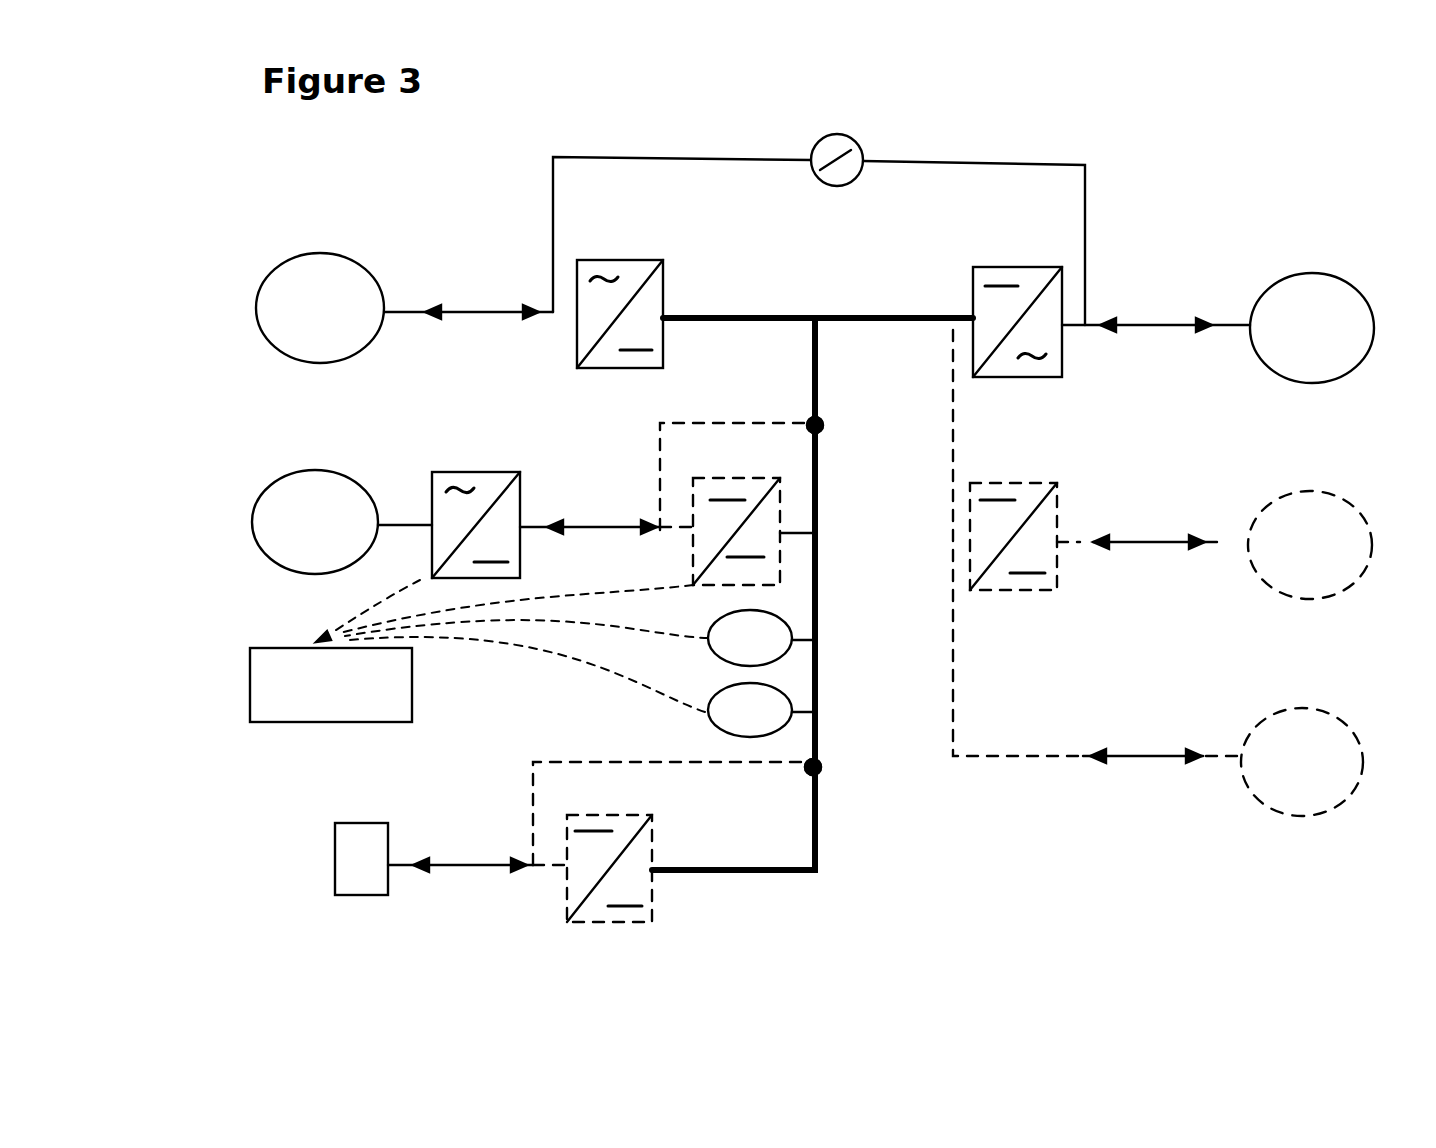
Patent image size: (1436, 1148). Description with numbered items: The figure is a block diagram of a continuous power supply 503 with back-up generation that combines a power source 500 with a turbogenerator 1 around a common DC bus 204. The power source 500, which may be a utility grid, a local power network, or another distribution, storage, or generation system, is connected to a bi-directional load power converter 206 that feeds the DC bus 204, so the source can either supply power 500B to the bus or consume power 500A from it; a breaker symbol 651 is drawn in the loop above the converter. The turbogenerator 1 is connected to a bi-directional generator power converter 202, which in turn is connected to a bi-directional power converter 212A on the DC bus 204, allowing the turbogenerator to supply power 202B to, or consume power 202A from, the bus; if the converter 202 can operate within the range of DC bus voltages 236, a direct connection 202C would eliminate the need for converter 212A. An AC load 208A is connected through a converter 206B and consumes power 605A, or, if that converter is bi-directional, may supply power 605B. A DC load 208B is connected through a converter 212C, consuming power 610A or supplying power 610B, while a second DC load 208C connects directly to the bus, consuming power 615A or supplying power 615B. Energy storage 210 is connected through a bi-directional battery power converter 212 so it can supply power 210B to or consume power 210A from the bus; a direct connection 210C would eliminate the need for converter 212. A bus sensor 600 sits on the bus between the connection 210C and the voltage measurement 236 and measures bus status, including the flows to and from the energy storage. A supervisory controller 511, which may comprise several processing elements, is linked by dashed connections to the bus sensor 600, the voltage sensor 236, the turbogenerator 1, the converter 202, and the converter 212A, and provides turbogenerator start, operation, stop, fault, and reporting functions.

The power supply 503 is at (655, 506).
The power source 500 is at (342, 325).
The power consumed from DC bus 500A is at (455, 282).
The power supplied to DC bus 500B is at (537, 320).
The bi-directional load power converter 206 is at (660, 258).
The DC bus 204 is at (785, 308).
The circuit breaker / switch 651 is at (860, 186).
The converter 206B is at (1060, 265).
The power supplied by load 208A 605B is at (1155, 290).
The power consumed by load 208A 605A is at (1210, 337).
The AC load 208A is at (1342, 345).
The bi-directional generator power converter 202 is at (520, 470).
The turbogenerator 1 is at (296, 539).
The power consumed by turbogenerator 202A is at (612, 490).
The power supplied by turbogenerator 202B is at (652, 540).
The direct connection 202C is at (830, 437).
The bi-directional power converter 212A is at (778, 477).
The converter 212C is at (1057, 482).
The power supplied by load 208B 610B is at (1140, 503).
The power consumed by load 208B 610A is at (1205, 555).
The DC load 208B is at (1340, 562).
The DC bus voltage measurement 236 is at (777, 653).
The bus sensor 600 is at (777, 725).
The supervisory controller 511 is at (298, 691).
The direct connection 210C is at (832, 772).
The power supplied by load 208C 615B is at (1140, 722).
The power consumed by load 208C 615A is at (1200, 770).
The DC load 208C is at (1332, 779).
The energy storage 210 is at (383, 870).
The power consumed by energy storage 210A is at (485, 812).
The power supplied by energy storage 210B is at (520, 875).
The bi-directional battery power converter 212 is at (650, 812).